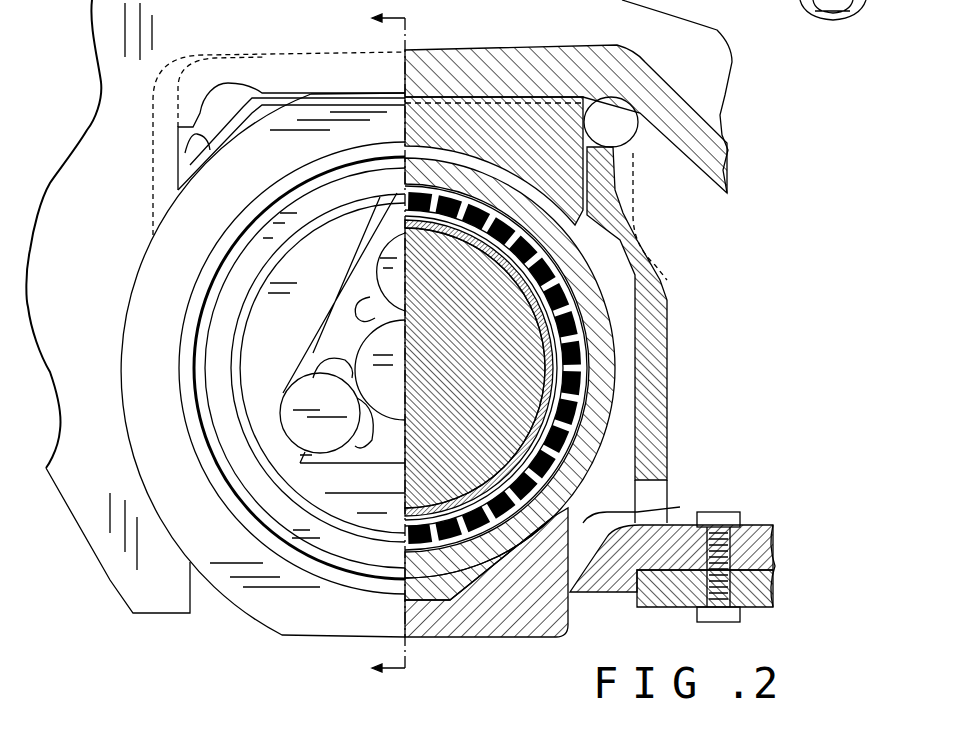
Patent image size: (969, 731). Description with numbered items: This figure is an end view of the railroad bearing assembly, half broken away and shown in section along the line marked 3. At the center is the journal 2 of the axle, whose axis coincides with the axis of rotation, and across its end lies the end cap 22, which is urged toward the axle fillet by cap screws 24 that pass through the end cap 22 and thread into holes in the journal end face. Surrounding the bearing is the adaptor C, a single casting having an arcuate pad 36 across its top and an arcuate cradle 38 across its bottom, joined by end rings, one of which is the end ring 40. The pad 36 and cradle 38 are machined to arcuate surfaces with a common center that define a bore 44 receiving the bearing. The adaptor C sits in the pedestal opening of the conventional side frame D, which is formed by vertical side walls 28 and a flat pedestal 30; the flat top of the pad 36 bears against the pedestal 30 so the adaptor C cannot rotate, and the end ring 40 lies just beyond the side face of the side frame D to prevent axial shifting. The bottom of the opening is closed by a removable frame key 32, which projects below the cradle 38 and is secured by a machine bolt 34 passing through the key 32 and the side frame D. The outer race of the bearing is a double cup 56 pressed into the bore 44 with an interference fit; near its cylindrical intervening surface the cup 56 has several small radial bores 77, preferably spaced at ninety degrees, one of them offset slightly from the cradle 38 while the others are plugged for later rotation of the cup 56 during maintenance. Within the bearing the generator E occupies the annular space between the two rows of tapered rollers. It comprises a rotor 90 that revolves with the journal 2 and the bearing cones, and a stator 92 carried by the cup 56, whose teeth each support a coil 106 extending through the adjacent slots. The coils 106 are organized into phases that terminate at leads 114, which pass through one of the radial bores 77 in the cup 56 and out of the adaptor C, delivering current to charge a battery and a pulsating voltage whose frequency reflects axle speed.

The journal 2 is at (483, 329).
The end cap 22 is at (217, 333).
The cap screws 24 is at (305, 420).
The side walls 28 is at (192, 596).
The pedestal 30 is at (457, 97).
The frame key 32 is at (586, 590).
The machine bolt 34 is at (755, 548).
The pad 36 is at (528, 93).
The cradle 38 is at (482, 607).
The end ring 40 is at (294, 615).
The bore 44 is at (527, 177).
The double cup 56 is at (587, 362).
The radial bores 77 is at (556, 270).
The rotor 90 is at (560, 444).
The stator 92 is at (603, 400).
The coil 106 is at (598, 345).
The leads 114 is at (650, 607).
The section line 3- 3 is at (377, 344).
The adaptor C is at (313, 97).
The side frame D is at (110, 582).
The generator E is at (603, 253).